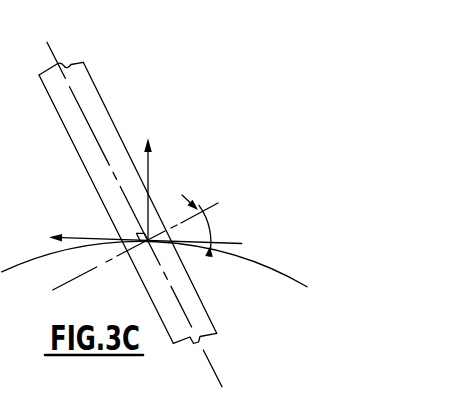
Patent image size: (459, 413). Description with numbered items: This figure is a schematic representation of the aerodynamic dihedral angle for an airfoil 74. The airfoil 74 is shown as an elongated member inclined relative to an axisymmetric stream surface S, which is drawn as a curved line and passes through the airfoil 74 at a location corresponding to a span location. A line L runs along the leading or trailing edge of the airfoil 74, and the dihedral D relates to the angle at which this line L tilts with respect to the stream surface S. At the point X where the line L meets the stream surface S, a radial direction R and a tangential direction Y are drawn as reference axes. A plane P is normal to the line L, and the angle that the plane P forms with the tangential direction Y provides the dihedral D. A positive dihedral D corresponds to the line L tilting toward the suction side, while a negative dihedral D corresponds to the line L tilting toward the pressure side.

The airfoil 74 is at (128, 98).
The line along the leading or trailing edge L is at (215, 375).
The axisymmetric stream surface S is at (270, 254).
The radial direction R is at (149, 166).
The tangential direction Y is at (136, 233).
The point X is at (137, 274).
The plane P is at (218, 203).
The dihedral angle D is at (212, 229).